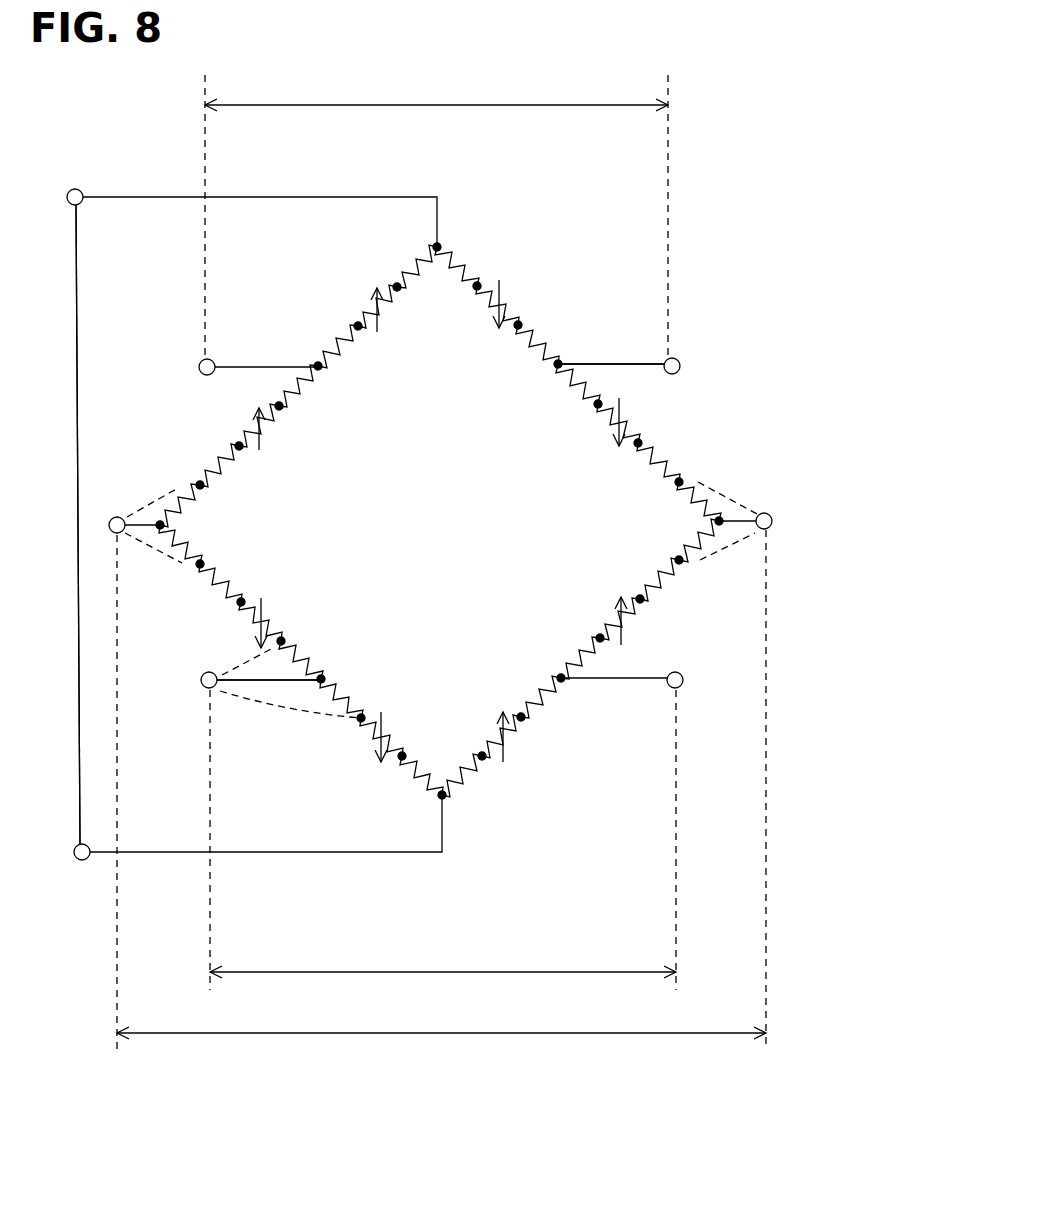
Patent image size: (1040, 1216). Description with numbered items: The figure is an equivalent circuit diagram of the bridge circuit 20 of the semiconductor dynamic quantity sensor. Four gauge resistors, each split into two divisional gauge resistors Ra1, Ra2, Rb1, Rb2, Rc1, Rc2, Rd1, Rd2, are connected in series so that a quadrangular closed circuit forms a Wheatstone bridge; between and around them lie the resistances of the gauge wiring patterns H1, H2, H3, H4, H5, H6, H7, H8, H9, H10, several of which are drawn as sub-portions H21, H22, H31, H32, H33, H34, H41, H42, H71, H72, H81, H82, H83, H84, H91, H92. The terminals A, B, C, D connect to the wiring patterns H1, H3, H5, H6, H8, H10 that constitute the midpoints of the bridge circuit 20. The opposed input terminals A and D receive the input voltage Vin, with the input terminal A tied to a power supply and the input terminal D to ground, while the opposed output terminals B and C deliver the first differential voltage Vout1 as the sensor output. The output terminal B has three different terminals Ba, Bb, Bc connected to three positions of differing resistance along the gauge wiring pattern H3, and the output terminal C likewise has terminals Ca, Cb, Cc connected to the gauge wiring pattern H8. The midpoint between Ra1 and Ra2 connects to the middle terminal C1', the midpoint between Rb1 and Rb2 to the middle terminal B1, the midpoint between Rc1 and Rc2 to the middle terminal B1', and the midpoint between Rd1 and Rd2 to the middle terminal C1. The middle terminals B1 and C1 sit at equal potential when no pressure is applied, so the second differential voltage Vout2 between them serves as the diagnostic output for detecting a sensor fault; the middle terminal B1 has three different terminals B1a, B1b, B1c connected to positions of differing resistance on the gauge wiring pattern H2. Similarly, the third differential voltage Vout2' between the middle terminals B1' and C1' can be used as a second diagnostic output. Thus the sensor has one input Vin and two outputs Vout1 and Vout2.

The bridge circuit 20 is at (634, 316).
The input terminal A is at (73, 189).
The input terminal D is at (82, 860).
The output terminal B is at (112, 532).
The output terminal C is at (772, 521).
The input voltage Vin is at (49, 524).
The first differential voltage Vout1 is at (441, 1051).
The second differential voltage Vout2 is at (443, 954).
The third differential voltage Vout2' is at (436, 87).
The middle terminal B1 is at (180, 680).
The middle terminal C1 is at (708, 680).
The middle terminal B1' is at (710, 366).
The middle terminal C1' is at (171, 367).
The terminal Ba is at (166, 484).
The terminal Bb is at (143, 518).
The terminal Bc is at (173, 564).
The terminal Ca is at (713, 483).
The terminal Cb is at (740, 517).
The terminal Cc is at (714, 562).
The terminal B1a is at (242, 668).
The terminal B1b is at (270, 686).
The terminal B1c is at (304, 722).
The divisional gauge resistor Ra1 is at (371, 296).
The divisional gauge resistor Ra2 is at (252, 427).
The divisional gauge resistor Rb1 is at (252, 632).
The divisional gauge resistor Rb2 is at (375, 752).
The divisional gauge resistor Rc1 is at (504, 300).
The divisional gauge resistor Rc2 is at (628, 422).
The divisional gauge resistor Rd1 is at (628, 628).
The divisional gauge resistor Rd2 is at (507, 752).
The gauge wiring pattern H1 is at (420, 790).
The gauge wiring pattern H2 is at (380, 679).
The resistance element H21 is at (305, 659).
The resistance element H22 is at (342, 697).
The gauge wiring pattern H3 is at (278, 523).
The resistance element H31 is at (222, 465).
The resistance element H32 is at (184, 505).
The resistance element H33 is at (186, 544).
The resistance element H34 is at (222, 580).
The gauge wiring pattern H4 is at (380, 366).
The resistance element H41 is at (340, 347).
The resistance element H42 is at (305, 386).
The gauge wiring pattern H5 is at (415, 265).
The gauge wiring pattern H6 is at (457, 264).
The gauge wiring pattern H7 is at (503, 394).
The resistance element H71 is at (534, 350).
The resistance element H72 is at (575, 388).
The gauge wiring pattern H8 is at (601, 522).
The resistance element H81 is at (660, 462).
The resistance element H82 is at (696, 504).
The resistance element H83 is at (695, 543).
The resistance element H84 is at (658, 580).
The gauge wiring pattern H9 is at (503, 651).
The resistance element H91 is at (578, 655).
The resistance element H92 is at (545, 690).
The gauge wiring pattern H10 is at (456, 790).